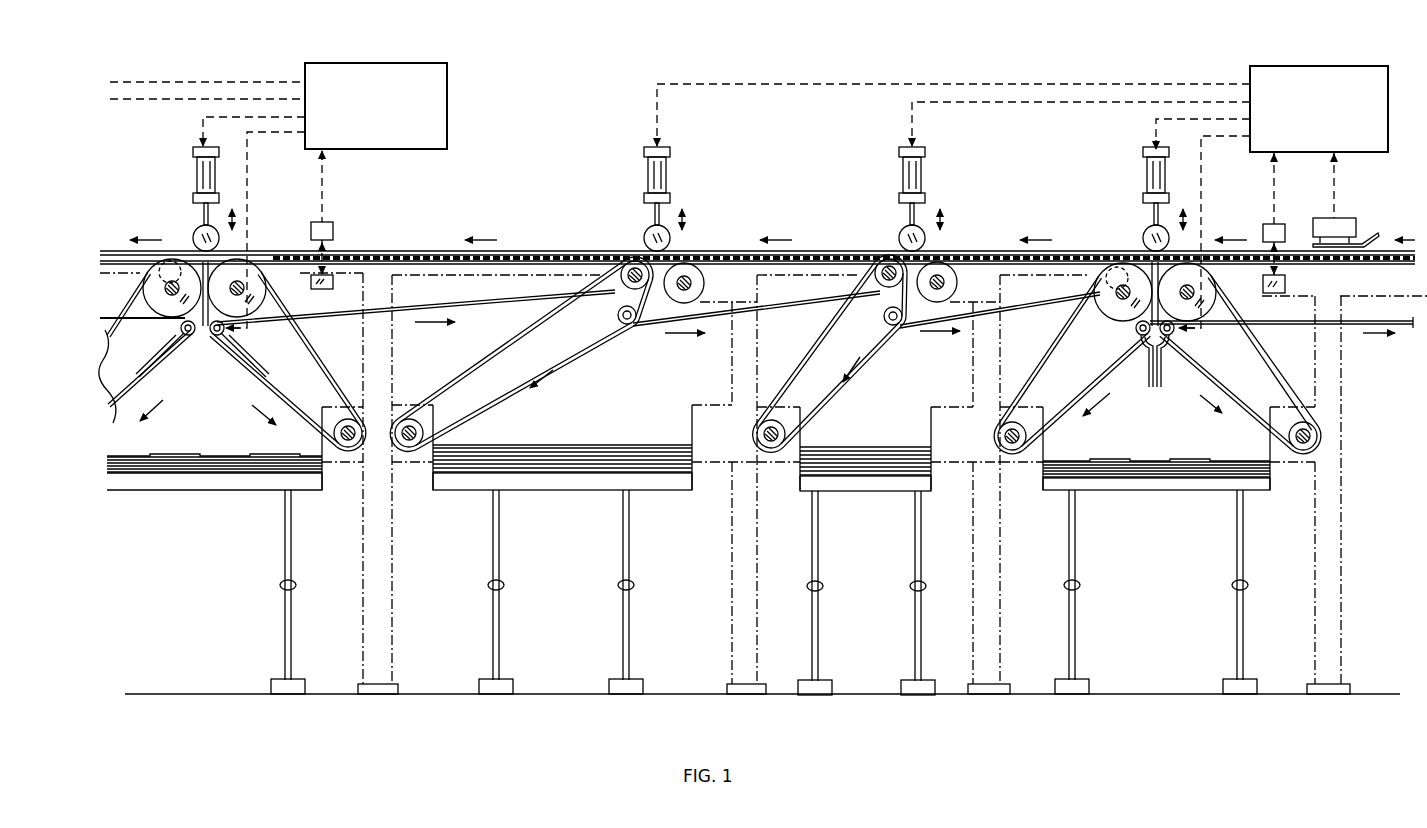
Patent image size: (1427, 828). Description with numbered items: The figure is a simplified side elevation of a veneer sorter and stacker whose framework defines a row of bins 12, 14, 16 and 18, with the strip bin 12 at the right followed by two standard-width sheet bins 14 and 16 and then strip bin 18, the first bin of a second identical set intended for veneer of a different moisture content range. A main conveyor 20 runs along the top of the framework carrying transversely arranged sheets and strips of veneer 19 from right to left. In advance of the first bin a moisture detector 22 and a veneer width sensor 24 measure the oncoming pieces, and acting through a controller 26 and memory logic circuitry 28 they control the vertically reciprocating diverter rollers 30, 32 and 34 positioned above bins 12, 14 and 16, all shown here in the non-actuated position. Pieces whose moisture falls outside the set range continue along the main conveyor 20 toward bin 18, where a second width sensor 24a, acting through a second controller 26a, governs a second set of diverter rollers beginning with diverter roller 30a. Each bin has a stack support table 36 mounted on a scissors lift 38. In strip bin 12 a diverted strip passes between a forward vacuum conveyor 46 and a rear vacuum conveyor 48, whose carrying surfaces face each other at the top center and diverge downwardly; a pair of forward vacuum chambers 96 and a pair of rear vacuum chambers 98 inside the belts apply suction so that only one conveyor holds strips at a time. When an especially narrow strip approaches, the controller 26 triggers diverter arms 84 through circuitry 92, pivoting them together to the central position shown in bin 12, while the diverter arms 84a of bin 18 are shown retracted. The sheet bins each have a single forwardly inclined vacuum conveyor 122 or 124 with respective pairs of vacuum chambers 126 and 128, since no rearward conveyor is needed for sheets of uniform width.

The strip bin 12 is at (1173, 696).
The standard-width sheet bin 14 is at (887, 696).
The standard-width sheet bin 16 is at (584, 700).
The strip bin 18 is at (232, 712).
The sheets and strips of veneer 19 is at (1360, 265).
The main conveyor 20 is at (977, 248).
The moisture detector 22 is at (1340, 218).
The veneer width sensor 24 is at (1276, 224).
The second width sensor 24a is at (333, 228).
The controller 26 is at (1322, 72).
The second controller 26a is at (447, 90).
The memory logic circuitry 28 is at (1168, 118).
The diverter roller 30 is at (1144, 236).
The diverter roller 30a is at (194, 235).
The diverter roller 32 is at (900, 236).
The diverter roller 34 is at (646, 235).
The stack support table 36 is at (224, 490).
The scissors lift 38 is at (294, 614).
The forward vacuum conveyor 46 is at (1057, 427).
The rear vacuum conveyor 48 is at (1254, 423).
The diverter arms 84 is at (1146, 360).
The diverter arms 84a is at (248, 385).
The circuitry 92 is at (1203, 200).
The forward vacuum chambers 96 is at (1085, 387).
The rear vacuum chambers 98 is at (1250, 387).
The vacuum conveyor 122 is at (810, 402).
The vacuum conveyor 124 is at (565, 347).
The vacuum chambers 126 is at (849, 368).
The vacuum chambers 128 is at (540, 368).